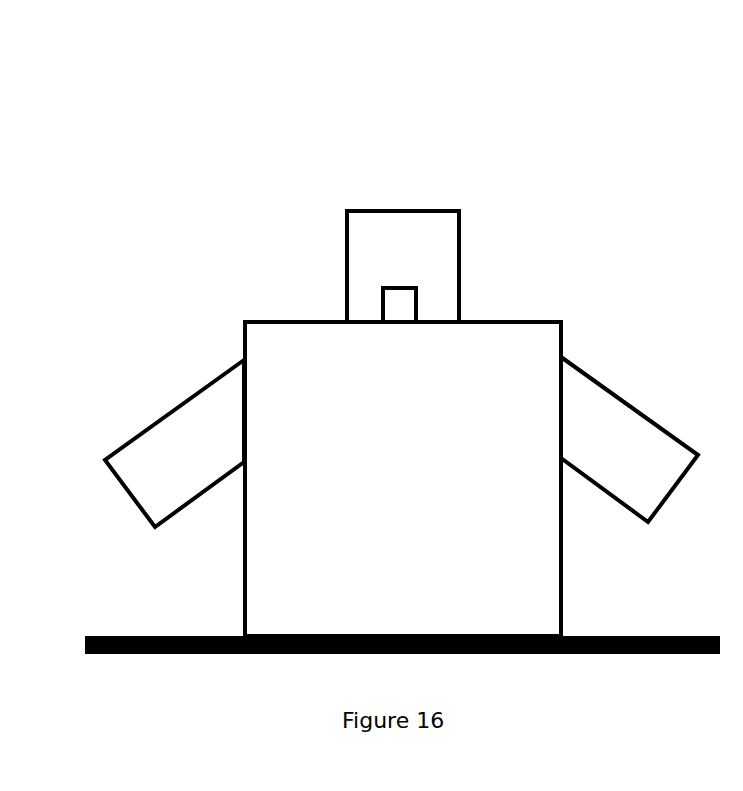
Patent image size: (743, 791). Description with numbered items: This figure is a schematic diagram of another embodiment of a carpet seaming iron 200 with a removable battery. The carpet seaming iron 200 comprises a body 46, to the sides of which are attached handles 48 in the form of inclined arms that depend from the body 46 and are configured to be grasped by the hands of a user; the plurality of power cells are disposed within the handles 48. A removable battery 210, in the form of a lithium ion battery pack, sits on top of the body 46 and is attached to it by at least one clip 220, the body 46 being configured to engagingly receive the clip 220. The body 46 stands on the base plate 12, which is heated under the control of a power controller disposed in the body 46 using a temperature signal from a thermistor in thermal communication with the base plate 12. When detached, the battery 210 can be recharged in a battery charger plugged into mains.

The carpet seaming iron 200 is at (661, 256).
The body 46 is at (244, 340).
The handles 48 is at (162, 417).
The removable battery 210 is at (355, 228).
The clip 220 is at (383, 307).
The base plate 12 is at (122, 658).